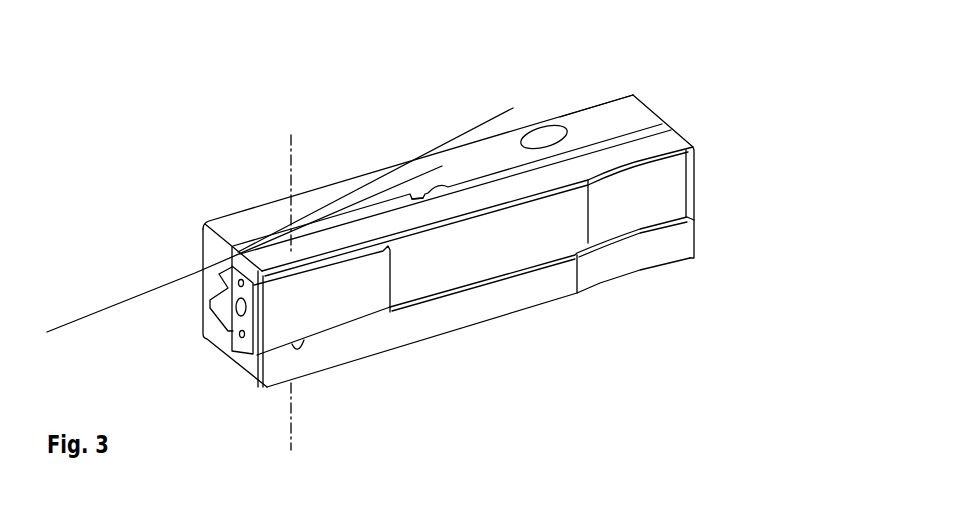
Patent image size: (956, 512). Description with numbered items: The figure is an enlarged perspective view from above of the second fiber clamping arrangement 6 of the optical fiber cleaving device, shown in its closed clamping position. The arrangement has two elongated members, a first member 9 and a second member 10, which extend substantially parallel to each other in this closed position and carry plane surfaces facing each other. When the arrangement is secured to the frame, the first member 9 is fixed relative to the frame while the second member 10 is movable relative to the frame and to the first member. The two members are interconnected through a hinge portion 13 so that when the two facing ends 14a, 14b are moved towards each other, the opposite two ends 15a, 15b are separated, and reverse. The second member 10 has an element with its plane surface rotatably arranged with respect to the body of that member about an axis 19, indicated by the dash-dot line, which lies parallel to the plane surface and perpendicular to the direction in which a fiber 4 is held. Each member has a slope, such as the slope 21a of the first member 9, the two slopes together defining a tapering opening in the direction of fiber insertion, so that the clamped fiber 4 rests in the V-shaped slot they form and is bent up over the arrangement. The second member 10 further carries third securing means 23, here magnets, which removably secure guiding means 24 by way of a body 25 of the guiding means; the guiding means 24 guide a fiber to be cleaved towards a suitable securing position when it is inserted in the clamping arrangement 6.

The optical fiber 4 is at (133, 295).
The second fiber clamping arrangement 6 is at (560, 351).
The first member 9 is at (630, 115).
The second member 10 is at (666, 185).
The hinge portion 13 is at (441, 189).
The end of first member 14a is at (233, 229).
The end of second member 14b is at (277, 258).
The opposite end of first member 15a is at (646, 118).
The opposite end of second member 15b is at (668, 143).
The axis 19 is at (290, 147).
The slope 21a is at (329, 221).
The third securing means 23 is at (238, 311).
The guiding means 24 is at (362, 302).
The body of guiding means 25 is at (245, 340).